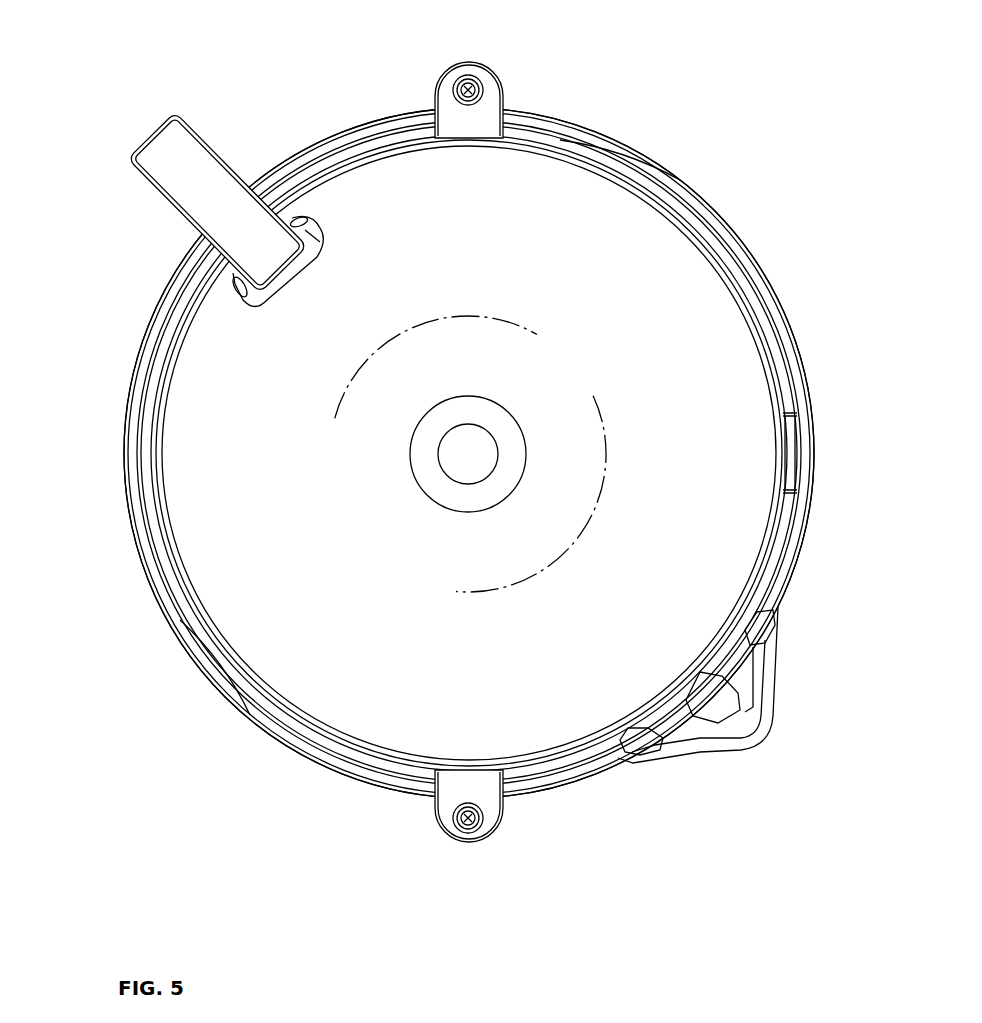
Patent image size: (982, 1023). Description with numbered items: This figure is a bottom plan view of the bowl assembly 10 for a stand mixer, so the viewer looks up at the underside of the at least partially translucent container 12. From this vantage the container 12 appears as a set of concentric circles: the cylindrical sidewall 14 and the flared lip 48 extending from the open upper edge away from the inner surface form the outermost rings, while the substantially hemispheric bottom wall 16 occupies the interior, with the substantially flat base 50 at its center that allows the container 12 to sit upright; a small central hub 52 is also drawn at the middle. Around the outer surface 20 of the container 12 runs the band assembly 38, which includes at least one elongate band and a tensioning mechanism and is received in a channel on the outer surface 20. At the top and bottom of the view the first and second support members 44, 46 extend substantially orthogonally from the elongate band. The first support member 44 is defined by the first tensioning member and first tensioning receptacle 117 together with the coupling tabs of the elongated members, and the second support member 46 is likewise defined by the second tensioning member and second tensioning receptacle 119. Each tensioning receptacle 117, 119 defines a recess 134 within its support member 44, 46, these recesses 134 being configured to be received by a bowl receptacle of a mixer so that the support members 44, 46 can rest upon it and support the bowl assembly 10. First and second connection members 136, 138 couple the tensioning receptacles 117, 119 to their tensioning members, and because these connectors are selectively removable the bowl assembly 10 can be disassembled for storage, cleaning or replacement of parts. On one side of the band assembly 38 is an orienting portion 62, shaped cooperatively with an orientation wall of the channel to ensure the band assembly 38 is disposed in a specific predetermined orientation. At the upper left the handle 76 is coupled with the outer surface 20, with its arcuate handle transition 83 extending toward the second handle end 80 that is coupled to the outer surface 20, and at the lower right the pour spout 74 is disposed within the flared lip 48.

The bowl assembly 10 is at (283, 73).
The container 12 is at (670, 168).
The sidewall 14 is at (160, 515).
The bottom wall 16 is at (200, 337).
The outer surface 20 is at (225, 605).
The band assembly 38 is at (236, 683).
The first support member 44 is at (490, 80).
The second support member 46 is at (448, 805).
The flared lip 48 is at (630, 143).
The flat base 50 is at (505, 377).
The center hub 52 is at (478, 452).
The orienting portion 62 is at (798, 470).
The pour spout 74 is at (732, 727).
The handle 76 is at (170, 148).
The second handle end 80 is at (268, 208).
The arcuate handle transition 83 is at (146, 160).
The first tensioning receptacle 117 is at (478, 117).
The second tensioning receptacle 119 is at (480, 790).
The recess 134 is at (455, 92).
The first connection member 136 is at (468, 82).
The second connection member 138 is at (480, 822).